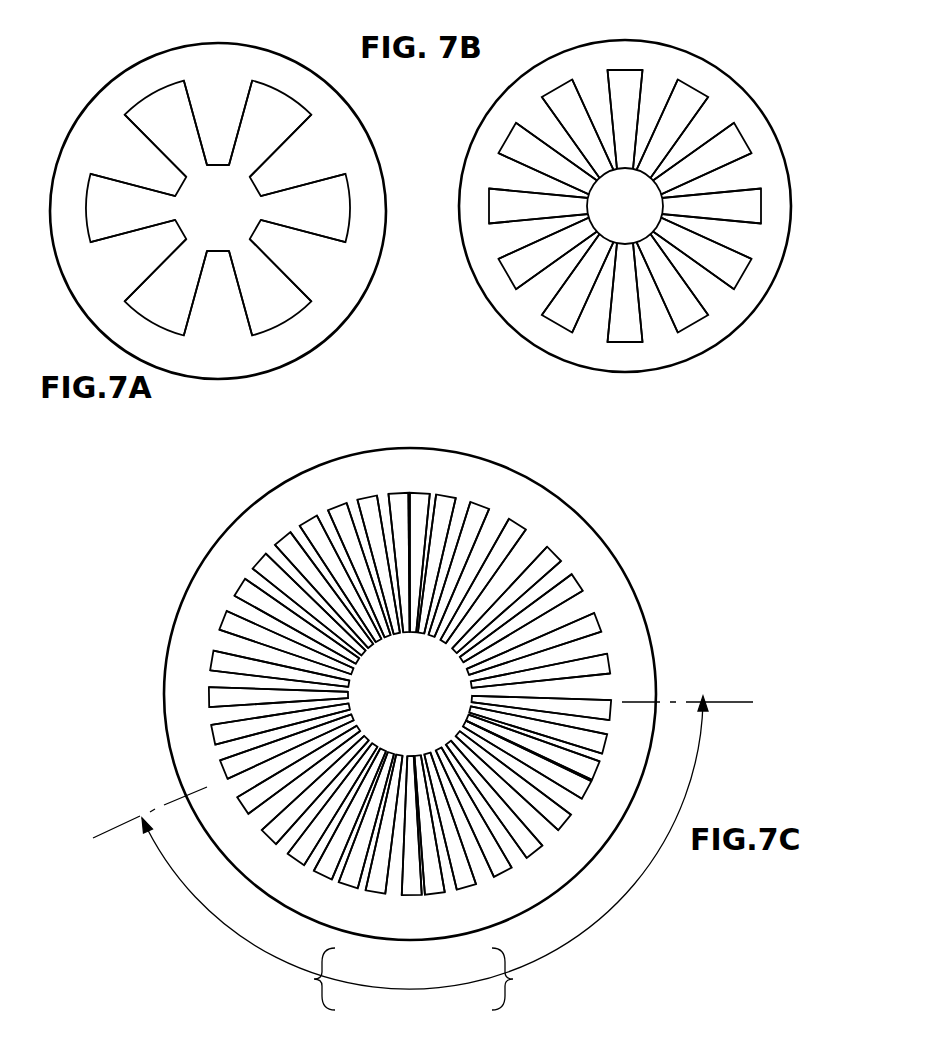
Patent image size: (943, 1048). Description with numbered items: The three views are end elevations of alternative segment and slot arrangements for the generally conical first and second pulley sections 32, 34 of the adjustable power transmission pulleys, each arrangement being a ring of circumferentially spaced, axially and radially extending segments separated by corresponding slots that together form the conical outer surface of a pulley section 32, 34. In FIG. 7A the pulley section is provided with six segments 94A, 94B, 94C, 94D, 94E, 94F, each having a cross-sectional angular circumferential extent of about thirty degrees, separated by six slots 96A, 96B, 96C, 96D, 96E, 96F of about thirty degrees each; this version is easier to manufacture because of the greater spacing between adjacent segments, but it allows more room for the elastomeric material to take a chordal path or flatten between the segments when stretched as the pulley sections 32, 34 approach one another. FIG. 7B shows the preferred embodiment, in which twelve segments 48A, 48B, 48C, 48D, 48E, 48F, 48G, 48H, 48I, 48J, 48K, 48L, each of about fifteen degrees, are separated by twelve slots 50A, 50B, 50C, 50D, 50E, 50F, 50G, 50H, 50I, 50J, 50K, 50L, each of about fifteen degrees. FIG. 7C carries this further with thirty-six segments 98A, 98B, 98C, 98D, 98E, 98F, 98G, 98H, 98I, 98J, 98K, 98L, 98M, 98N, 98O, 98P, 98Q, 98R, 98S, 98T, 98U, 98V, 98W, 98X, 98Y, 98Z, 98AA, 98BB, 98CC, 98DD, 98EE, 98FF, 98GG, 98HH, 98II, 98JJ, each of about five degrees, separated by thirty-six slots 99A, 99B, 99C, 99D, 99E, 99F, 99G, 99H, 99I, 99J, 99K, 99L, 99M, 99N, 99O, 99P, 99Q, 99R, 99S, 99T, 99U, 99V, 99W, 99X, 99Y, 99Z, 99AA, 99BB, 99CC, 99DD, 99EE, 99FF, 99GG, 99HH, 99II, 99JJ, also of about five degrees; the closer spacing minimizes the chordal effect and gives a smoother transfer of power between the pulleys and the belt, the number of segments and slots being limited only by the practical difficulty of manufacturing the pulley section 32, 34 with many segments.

In FIG. 7A, the first pulley section 32 is at (218, 205).
In FIG. 7B, the first pulley section 32 is at (625, 206).
In FIG. 7C, the first pulley section 32 is at (469, 694).
In FIG. 7A, the second pulley section 34 is at (120, 78).
In FIG. 7B, the second pulley section 34 is at (730, 67).
In FIG. 7C, the second pulley section 34 is at (604, 543).
In FIG. 7A, the segment 94A is at (305, 160).
In FIG. 7A, the segment 94B is at (297, 268).
In FIG. 7A, the segment 94C is at (207, 318).
In FIG. 7A, the segment 94D is at (115, 268).
In FIG. 7A, the segment 94E is at (102, 160).
In FIG. 7A, the segment 94F is at (202, 92).
In FIG. 7A, the slot 96A is at (252, 123).
In FIG. 7A, the slot 96B is at (312, 220).
In FIG. 7A, the slot 96C is at (252, 300).
In FIG. 7A, the slot 96D is at (150, 307).
In FIG. 7A, the slot 96E is at (99, 220).
In FIG. 7A, the slot 96F is at (147, 123).
In FIG. 7B, the slot 50A is at (625, 66).
In FIG. 7B, the slot 50B is at (695, 85).
In FIG. 7B, the slot 50C is at (746, 136).
In FIG. 7B, the slot 50D is at (765, 206).
In FIG. 7B, the slot 50E is at (746, 276).
In FIG. 7B, the slot 50F is at (695, 327).
In FIG. 7B, the slot 50G is at (625, 346).
In FIG. 7B, the slot 50H is at (555, 327).
In FIG. 7B, the slot 50I is at (504, 276).
In FIG. 7B, the slot 50J is at (485, 206).
In FIG. 7B, the slot 50K is at (504, 136).
In FIG. 7B, the slot 50L is at (555, 85).
In FIG. 7B, the segment 48A is at (656, 90).
In FIG. 7B, the segment 48B is at (710, 121).
In FIG. 7B, the segment 48C is at (741, 175).
In FIG. 7B, the segment 48D is at (741, 237).
In FIG. 7B, the segment 48E is at (710, 291).
In FIG. 7B, the segment 48F is at (656, 322).
In FIG. 7B, the segment 48G is at (594, 322).
In FIG. 7B, the segment 48H is at (540, 291).
In FIG. 7B, the segment 48I is at (509, 237).
In FIG. 7B, the segment 48J is at (509, 175).
In FIG. 7B, the segment 48K is at (540, 121).
In FIG. 7B, the segment 48L is at (594, 90).
In FIG. 7C, the pole tooth 98A is at (420, 487).
In FIG. 7C, the pole tooth 98B is at (447, 490).
In FIG. 7C, the pole tooth 98C is at (482, 500).
In FIG. 7C, the pole tooth 98D is at (521, 519).
In FIG. 7C, the pole tooth 98E is at (558, 550).
In FIG. 7C, the pole tooth 98F is at (582, 579).
In FIG. 7C, the pole tooth 98G is at (603, 620).
In FIG. 7C, the pole tooth 98H is at (615, 663).
In FIG. 7C, the pole tooth 98I is at (497, 838).
In FIG. 7C, the pole tooth 98J is at (538, 727).
In FIG. 7C, the pole tooth 98K is at (532, 743).
In FIG. 7C, the pole tooth 98L is at (526, 757).
In FIG. 7C, the pole tooth 98M is at (511, 778).
In FIG. 7C, the pole tooth 98N is at (492, 796).
In FIG. 7C, the pole tooth 98O is at (471, 810).
In FIG. 7C, the pole tooth 98P is at (447, 820).
In FIG. 7C, the pole tooth 98Q is at (426, 824).
In FIG. 7C, the pole tooth 98R is at (411, 825).
In FIG. 7C, the pole tooth 98S is at (388, 823).
In FIG. 7C, the pole tooth 98T is at (370, 819).
In FIG. 7C, the pole tooth 98U is at (353, 813).
In FIG. 7C, the pole tooth 98V is at (335, 802).
In FIG. 7C, the pole tooth 98W is at (318, 787).
In FIG. 7C, the pole tooth 98X is at (300, 767).
In FIG. 7C, the pole tooth 98Y is at (218, 772).
In FIG. 7C, the pole tooth 98Z is at (207, 736).
In FIG. 7C, the pole tooth 98AA is at (203, 697).
In FIG. 7C, the pole tooth 98BB is at (206, 659).
In FIG. 7C, the pole tooth 98CC is at (217, 618).
In FIG. 7C, the pole tooth 98DD is at (235, 584).
In FIG. 7C, the pole tooth 98EE is at (255, 557).
In FIG. 7C, the pole tooth 98FF is at (279, 534).
In FIG. 7C, the pole tooth 98GG is at (305, 516).
In FIG. 7C, the pole tooth 98HH is at (335, 501).
In FIG. 7C, the pole tooth 98II is at (366, 492).
In FIG. 7C, the pole tooth 98JJ is at (398, 487).
In FIG. 7C, the slot 99A is at (432, 498).
In FIG. 7C, the slot 99B is at (462, 504).
In FIG. 7C, the slot 99C is at (497, 517).
In FIG. 7C, the slot 99D is at (534, 541).
In FIG. 7C, the slot 99E is at (563, 570).
In FIG. 7C, the slot 99F is at (585, 604).
In FIG. 7C, the slot 99G is at (600, 644).
In FIG. 7C, the slot 99H is at (607, 687).
In FIG. 7C, the slot 99I is at (497, 857).
In FIG. 7C, the slot 99J is at (536, 737).
In FIG. 7C, the slot 99K is at (529, 751).
In FIG. 7C, the slot 99L is at (522, 773).
In FIG. 7C, the slot 99M is at (507, 793).
In FIG. 7C, the slot 99N is at (486, 807).
In FIG. 7C, the slot 99O is at (465, 818).
In FIG. 7C, the slot 99P is at (441, 823).
In FIG. 7C, the slot 99Q is at (420, 825).
In FIG. 7C, the slot 99R is at (394, 825).
In FIG. 7C, the slot 99S is at (375, 822).
In FIG. 7C, the slot 99T is at (359, 817).
In FIG. 7C, the slot 99U is at (340, 810).
In FIG. 7C, the slot 99V is at (322, 798).
In FIG. 7C, the slot 99W is at (305, 783).
In FIG. 7C, the slot 99X is at (291, 761).
In FIG. 7C, the slot 99Y is at (222, 751).
In FIG. 7C, the slot 99Z is at (214, 716).
In FIG. 7C, the slot 99AA is at (214, 679).
In FIG. 7C, the slot 99BB is at (220, 641).
In FIG. 7C, the slot 99CC is at (234, 605).
In FIG. 7C, the slot 99DD is at (252, 576).
In FIG. 7C, the slot 99EE is at (273, 552).
In FIG. 7C, the slot 99FF is at (297, 532).
In FIG. 7C, the slot 99GG is at (324, 517).
In FIG. 7C, the slot 99HH is at (353, 505).
In FIG. 7C, the slot 99II is at (383, 499).
In FIG. 7C, the slot 99JJ is at (409, 497).